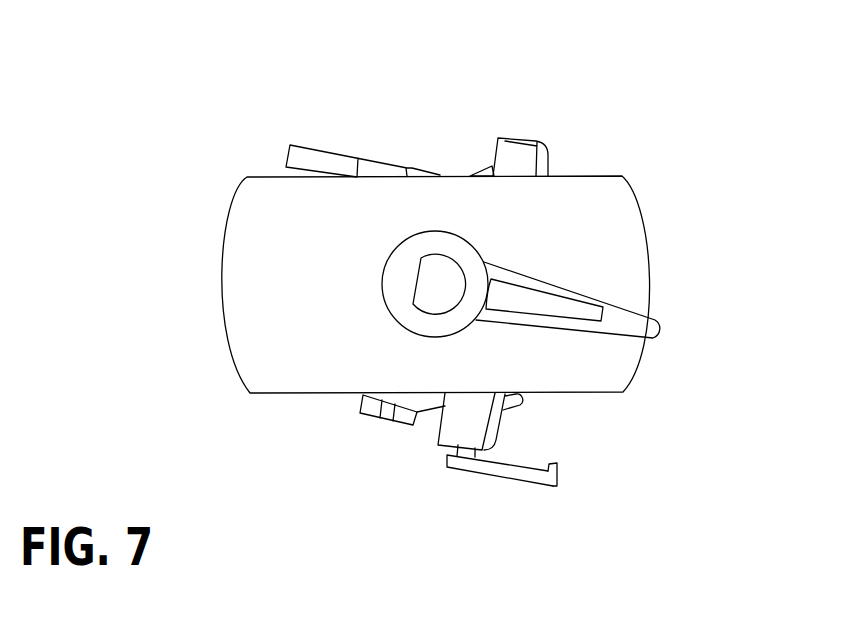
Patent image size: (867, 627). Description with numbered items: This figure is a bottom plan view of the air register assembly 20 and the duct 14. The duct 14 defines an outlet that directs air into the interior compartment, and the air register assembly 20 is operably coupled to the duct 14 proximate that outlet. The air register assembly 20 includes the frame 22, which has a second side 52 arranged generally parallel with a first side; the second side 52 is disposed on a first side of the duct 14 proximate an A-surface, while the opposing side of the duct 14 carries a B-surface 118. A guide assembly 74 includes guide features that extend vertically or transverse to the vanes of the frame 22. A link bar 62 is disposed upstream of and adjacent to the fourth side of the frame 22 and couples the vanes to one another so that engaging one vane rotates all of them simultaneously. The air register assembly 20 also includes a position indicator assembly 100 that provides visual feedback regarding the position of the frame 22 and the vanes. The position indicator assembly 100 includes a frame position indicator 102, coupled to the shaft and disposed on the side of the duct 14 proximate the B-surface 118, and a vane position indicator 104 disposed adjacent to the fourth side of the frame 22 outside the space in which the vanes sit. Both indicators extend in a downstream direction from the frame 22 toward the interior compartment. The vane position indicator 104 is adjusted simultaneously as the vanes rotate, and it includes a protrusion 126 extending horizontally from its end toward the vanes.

The air register assembly 20 is at (640, 140).
The duct 14 is at (253, 315).
The B-surface 118 is at (303, 250).
The position indicator assembly 100 is at (583, 271).
The frame position indicator 102 is at (622, 314).
The guide assembly 74 is at (320, 148).
The frame 22 is at (545, 142).
The second side 52 is at (498, 152).
The link bar 62 is at (372, 410).
The vane position indicator 104 is at (575, 508).
The protrusion 126 is at (557, 468).